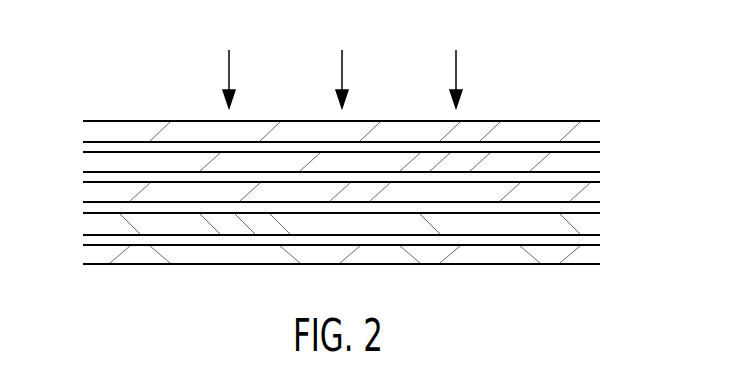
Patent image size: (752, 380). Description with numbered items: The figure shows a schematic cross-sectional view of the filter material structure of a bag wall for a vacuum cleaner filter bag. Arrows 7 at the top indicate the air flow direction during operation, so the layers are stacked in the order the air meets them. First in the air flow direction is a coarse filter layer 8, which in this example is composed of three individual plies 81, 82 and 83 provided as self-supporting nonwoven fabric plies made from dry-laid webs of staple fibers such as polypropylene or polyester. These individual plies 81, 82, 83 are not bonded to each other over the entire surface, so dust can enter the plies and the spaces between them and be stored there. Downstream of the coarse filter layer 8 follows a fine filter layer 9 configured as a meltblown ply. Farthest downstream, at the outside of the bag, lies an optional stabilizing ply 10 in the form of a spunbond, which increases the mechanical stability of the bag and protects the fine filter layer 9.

The arrows 7 is at (457, 72).
The coarse filter layer 8 is at (335, 163).
The individual ply 81 is at (97, 128).
The individual ply 82 is at (97, 159).
The individual ply 83 is at (97, 189).
The fine filter layer 9 is at (587, 222).
The stabilizing ply 10 is at (585, 255).